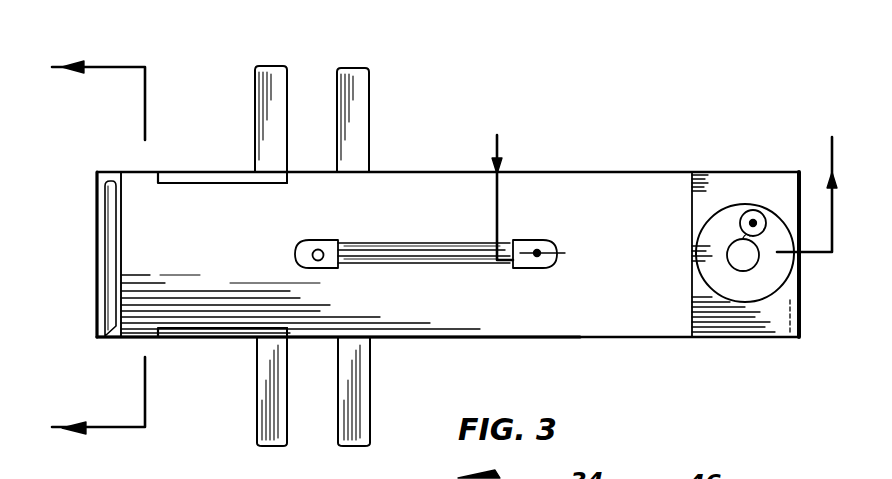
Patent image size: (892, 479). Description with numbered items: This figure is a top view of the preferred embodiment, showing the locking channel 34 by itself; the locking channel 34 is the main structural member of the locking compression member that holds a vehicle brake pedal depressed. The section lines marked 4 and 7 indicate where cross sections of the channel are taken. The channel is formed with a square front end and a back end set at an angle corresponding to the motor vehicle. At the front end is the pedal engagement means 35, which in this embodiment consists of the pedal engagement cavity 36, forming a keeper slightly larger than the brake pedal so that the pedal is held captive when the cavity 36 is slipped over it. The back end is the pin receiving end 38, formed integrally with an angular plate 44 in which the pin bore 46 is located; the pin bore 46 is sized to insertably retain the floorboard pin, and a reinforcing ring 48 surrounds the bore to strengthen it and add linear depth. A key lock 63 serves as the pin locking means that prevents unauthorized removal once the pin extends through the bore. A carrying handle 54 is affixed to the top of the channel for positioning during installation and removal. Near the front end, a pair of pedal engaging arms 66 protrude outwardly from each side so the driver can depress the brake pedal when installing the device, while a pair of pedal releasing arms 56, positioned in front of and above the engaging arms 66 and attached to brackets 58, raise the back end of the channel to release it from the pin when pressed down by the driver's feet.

The locking channel 34 is at (622, 170).
The pedal engagement means 35 is at (110, 133).
The pedal engagement cavity 36 is at (114, 254).
The pin receiving end 38 is at (803, 316).
The angular plate 44 is at (748, 170).
The pin bore 46 is at (752, 268).
The reinforcing ring 48 is at (737, 303).
The carrying handle 54 is at (424, 242).
The pedal releasing arms 56 is at (262, 66).
The brackets 58 is at (227, 172).
The key lock 63 is at (757, 212).
The pedal engaging arms 66 is at (365, 68).
The section line 4- 4 is at (662, 183).
The section line 7- 7 is at (88, 253).